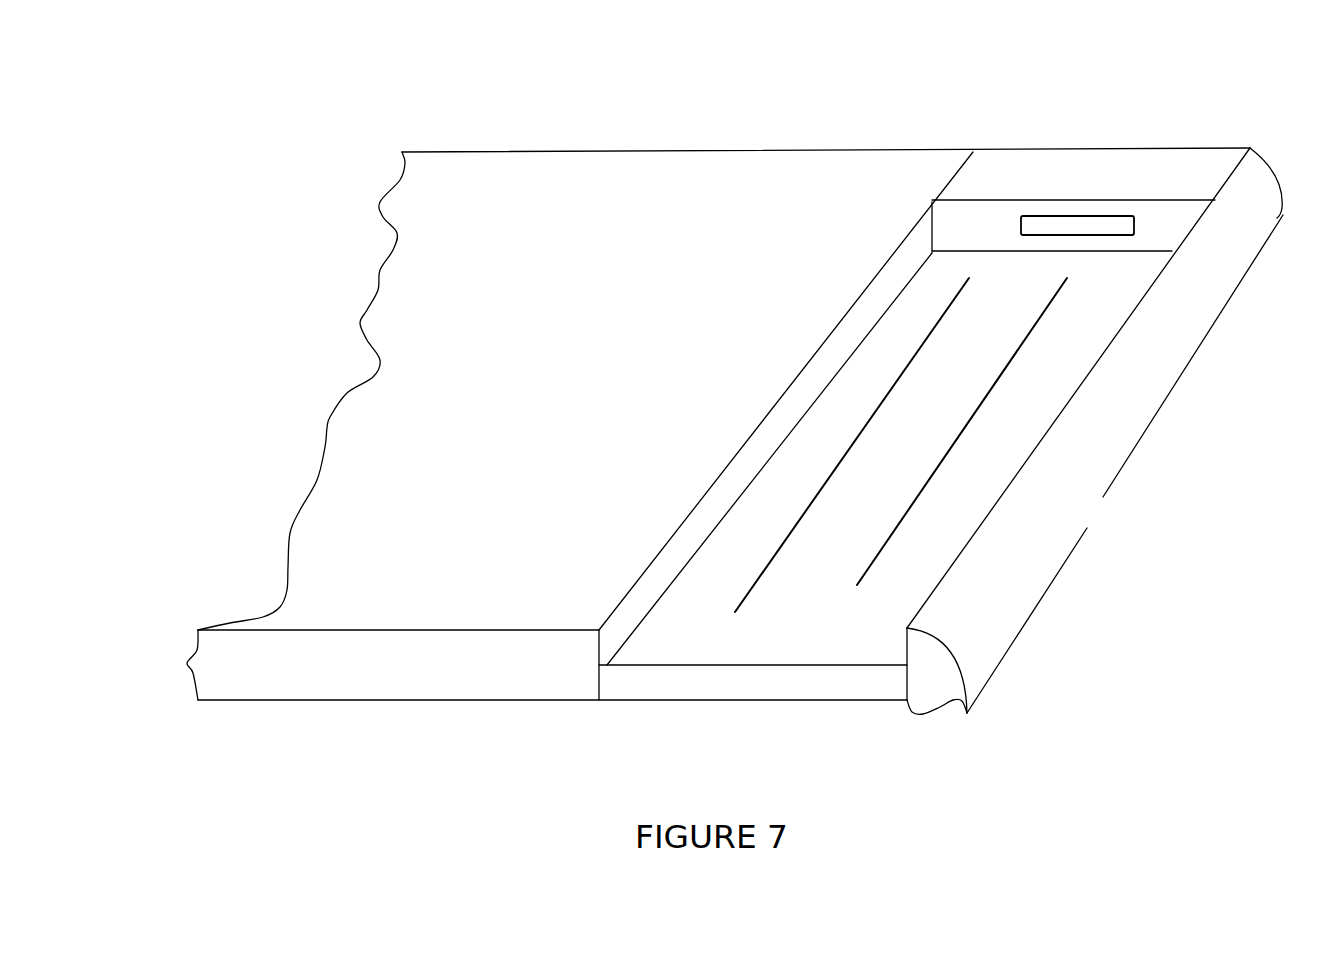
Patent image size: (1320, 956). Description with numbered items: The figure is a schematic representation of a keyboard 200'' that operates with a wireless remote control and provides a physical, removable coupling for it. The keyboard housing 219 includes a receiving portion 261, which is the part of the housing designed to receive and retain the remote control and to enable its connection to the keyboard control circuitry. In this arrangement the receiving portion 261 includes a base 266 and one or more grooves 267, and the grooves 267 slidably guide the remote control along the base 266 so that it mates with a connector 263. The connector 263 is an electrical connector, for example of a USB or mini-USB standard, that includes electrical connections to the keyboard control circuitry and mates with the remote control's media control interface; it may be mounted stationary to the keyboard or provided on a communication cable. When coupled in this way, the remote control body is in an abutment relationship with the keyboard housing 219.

The keyboard 200'' is at (735, 408).
The keyboard housing 219 is at (768, 227).
The receiving portion 261 is at (730, 650).
The connector 263 is at (1077, 215).
The base 266 is at (890, 593).
The grooves 267 is at (950, 457).